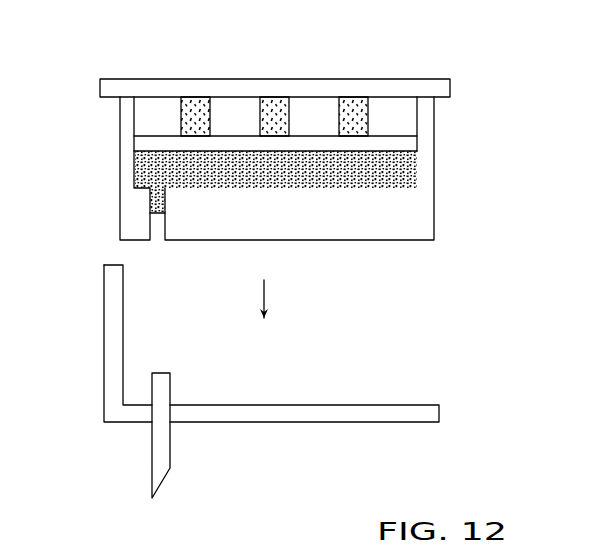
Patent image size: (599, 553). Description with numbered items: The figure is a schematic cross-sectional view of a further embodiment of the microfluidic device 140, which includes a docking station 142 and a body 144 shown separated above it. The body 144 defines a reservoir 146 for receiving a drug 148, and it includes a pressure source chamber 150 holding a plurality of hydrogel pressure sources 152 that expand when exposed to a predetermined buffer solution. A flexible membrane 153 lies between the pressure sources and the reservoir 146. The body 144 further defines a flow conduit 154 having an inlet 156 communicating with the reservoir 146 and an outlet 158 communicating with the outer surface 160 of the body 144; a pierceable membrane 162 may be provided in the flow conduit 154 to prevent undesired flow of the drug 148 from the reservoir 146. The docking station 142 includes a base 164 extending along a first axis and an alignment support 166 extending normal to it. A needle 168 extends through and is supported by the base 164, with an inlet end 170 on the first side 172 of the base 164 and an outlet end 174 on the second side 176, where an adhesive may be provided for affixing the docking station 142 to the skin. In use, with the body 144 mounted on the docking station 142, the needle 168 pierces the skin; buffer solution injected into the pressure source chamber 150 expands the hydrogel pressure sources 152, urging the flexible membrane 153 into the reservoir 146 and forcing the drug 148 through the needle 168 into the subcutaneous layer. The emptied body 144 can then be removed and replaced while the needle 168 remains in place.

The microfluidic device 140 is at (471, 315).
The docking station 142 is at (254, 407).
The body 144 is at (440, 132).
The reservoir 146 is at (417, 168).
The drug 148 is at (372, 190).
The pressure source chamber 150 is at (323, 108).
The hydrogel pressure sources 152 is at (275, 100).
The flexible membrane 153 is at (158, 142).
The flow conduit 154 is at (166, 219).
The inlet 156 is at (150, 173).
The outlet 158 is at (157, 238).
The outer surface 160 is at (363, 240).
The pierceable membrane 162 is at (150, 212).
The base 164 is at (282, 418).
The alignment support 166 is at (103, 328).
The needle 168 is at (152, 442).
The inlet end 170 is at (149, 441).
The first side 172 is at (305, 405).
The outlet end 174 is at (163, 483).
The second side 176 is at (300, 422).